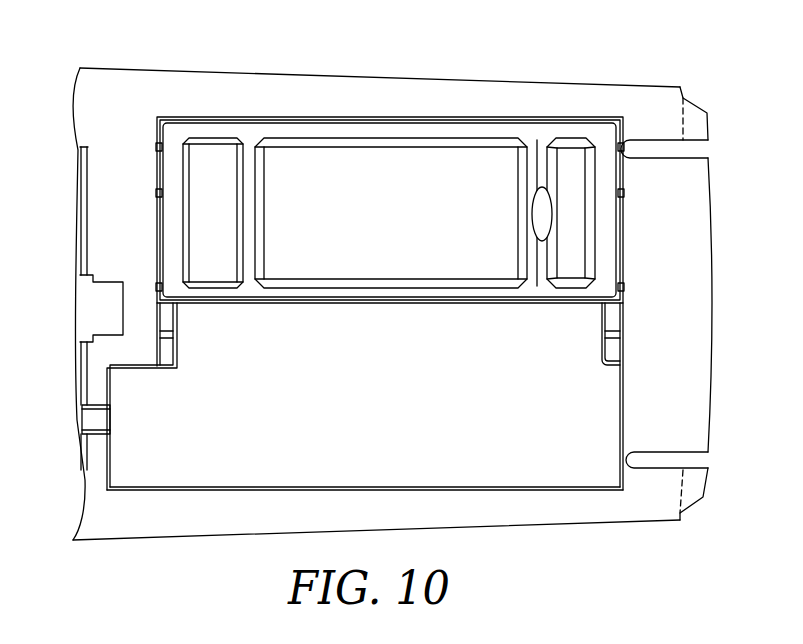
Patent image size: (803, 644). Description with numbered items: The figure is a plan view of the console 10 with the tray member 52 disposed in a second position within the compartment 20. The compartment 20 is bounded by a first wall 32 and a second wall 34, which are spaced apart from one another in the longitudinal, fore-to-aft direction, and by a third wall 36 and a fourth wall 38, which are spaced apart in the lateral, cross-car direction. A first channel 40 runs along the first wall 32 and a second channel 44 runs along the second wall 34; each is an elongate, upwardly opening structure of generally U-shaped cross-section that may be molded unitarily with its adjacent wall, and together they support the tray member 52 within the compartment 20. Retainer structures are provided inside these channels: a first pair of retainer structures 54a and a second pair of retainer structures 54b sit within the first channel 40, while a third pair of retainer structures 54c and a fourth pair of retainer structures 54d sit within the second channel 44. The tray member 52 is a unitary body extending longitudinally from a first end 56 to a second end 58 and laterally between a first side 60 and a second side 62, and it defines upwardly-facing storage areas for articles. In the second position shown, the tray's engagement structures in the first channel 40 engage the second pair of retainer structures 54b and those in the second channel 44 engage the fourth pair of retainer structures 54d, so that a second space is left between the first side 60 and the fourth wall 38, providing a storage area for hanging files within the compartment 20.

The console 10 is at (177, 63).
The compartment 20 is at (448, 385).
The first wall 32 is at (112, 393).
The second wall 34 is at (620, 442).
The third wall 36 is at (297, 118).
The fourth wall 38 is at (365, 488).
The first channel 40 is at (167, 358).
The second channel 44 is at (612, 355).
The tray member 52 is at (429, 138).
The first pair of retainer structures 54a is at (158, 193).
The second pair of retainer structures 54b is at (158, 145).
The third pair of retainer structures 54c is at (623, 197).
The fourth pair of retainer structures 54d is at (623, 147).
The first end 56 is at (162, 232).
The second end 58 is at (617, 220).
The first side 60 is at (368, 302).
The second side 62 is at (355, 123).